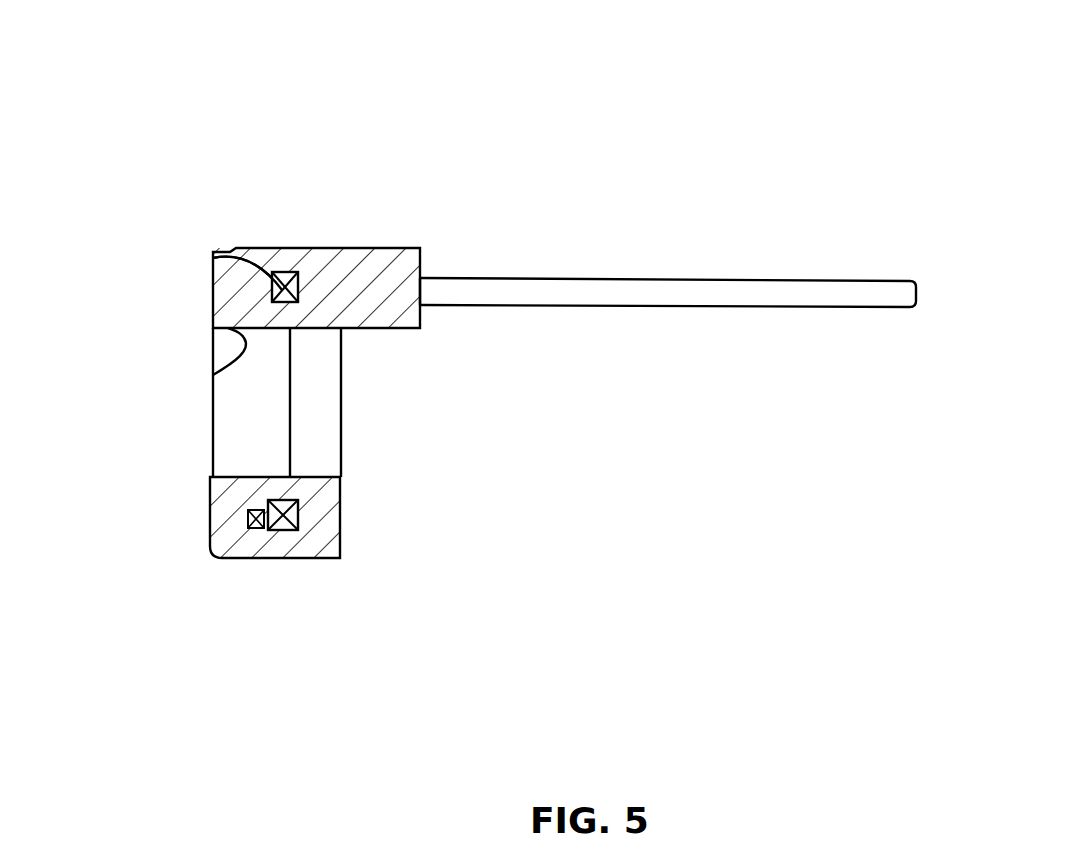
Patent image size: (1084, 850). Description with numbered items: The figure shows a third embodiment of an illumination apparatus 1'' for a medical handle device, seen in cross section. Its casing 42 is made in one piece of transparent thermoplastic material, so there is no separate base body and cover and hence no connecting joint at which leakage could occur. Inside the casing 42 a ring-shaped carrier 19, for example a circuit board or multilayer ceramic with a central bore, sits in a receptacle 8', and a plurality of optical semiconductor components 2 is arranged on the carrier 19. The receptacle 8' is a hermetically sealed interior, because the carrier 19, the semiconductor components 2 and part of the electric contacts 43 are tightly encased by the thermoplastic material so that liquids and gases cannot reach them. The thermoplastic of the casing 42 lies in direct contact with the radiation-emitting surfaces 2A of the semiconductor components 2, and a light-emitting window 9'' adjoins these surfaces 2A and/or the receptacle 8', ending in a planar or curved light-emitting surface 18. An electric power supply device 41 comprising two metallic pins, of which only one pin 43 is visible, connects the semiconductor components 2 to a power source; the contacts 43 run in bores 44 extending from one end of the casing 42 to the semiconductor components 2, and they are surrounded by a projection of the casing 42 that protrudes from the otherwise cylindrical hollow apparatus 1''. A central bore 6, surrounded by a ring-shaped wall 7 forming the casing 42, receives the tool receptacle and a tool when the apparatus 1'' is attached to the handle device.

The illumination apparatus 1'' is at (493, 336).
The optical semiconductor components 2 is at (267, 527).
The radiation-emitting surfaces 2A is at (245, 522).
The bore 6 is at (213, 375).
The ring-shaped wall 7 is at (300, 488).
The receptacle 8' is at (194, 255).
The light-emitting window 9'' is at (205, 509).
The light-emitting surface 18 is at (208, 512).
The carrier 19 is at (287, 290).
The electric power supply device 41 is at (655, 242).
The casing 42 is at (240, 303).
The electric contacts 43 is at (718, 293).
The bores 44 is at (425, 305).